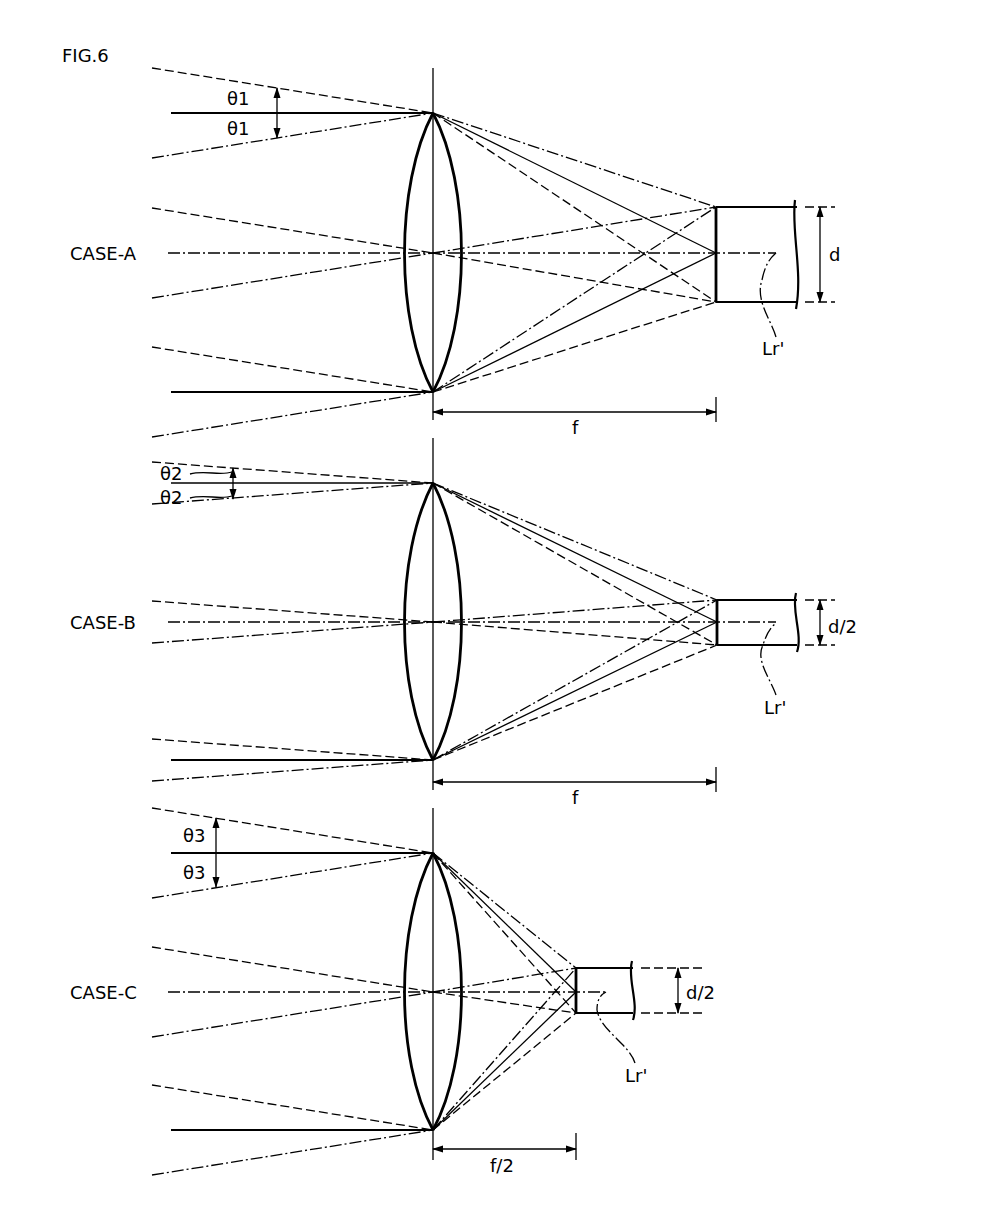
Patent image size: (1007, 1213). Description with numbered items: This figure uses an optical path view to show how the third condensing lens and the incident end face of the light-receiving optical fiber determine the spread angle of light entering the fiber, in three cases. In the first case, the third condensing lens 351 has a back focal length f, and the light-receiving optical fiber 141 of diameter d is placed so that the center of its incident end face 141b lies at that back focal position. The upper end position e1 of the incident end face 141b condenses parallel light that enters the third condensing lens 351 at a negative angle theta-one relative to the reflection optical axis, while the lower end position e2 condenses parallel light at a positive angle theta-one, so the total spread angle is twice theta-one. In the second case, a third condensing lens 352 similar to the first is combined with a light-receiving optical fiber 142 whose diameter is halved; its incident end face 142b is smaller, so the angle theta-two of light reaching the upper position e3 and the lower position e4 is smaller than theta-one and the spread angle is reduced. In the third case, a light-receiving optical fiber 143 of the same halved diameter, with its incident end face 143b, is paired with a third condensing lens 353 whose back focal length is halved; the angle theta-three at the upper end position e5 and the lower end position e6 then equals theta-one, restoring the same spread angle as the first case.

The third condensing lens 351 is at (466, 151).
The third condensing lens 352 is at (464, 525).
The third condensing lens 353 is at (467, 914).
The light-receiving optical fiber 141 is at (728, 215).
The incident end face 141b is at (716, 206).
The light-receiving optical fiber 142 is at (728, 578).
The incident end face 142b is at (716, 600).
The light-receiving optical fiber 143 is at (592, 946).
The incident end face 143b is at (574, 967).
The upper end position e1 is at (717, 206).
The lower end position e2 is at (716, 303).
The upper position e3 is at (718, 599).
The lower position e4 is at (718, 646).
The upper end position e5 is at (578, 967).
The lower end position e6 is at (578, 1014).